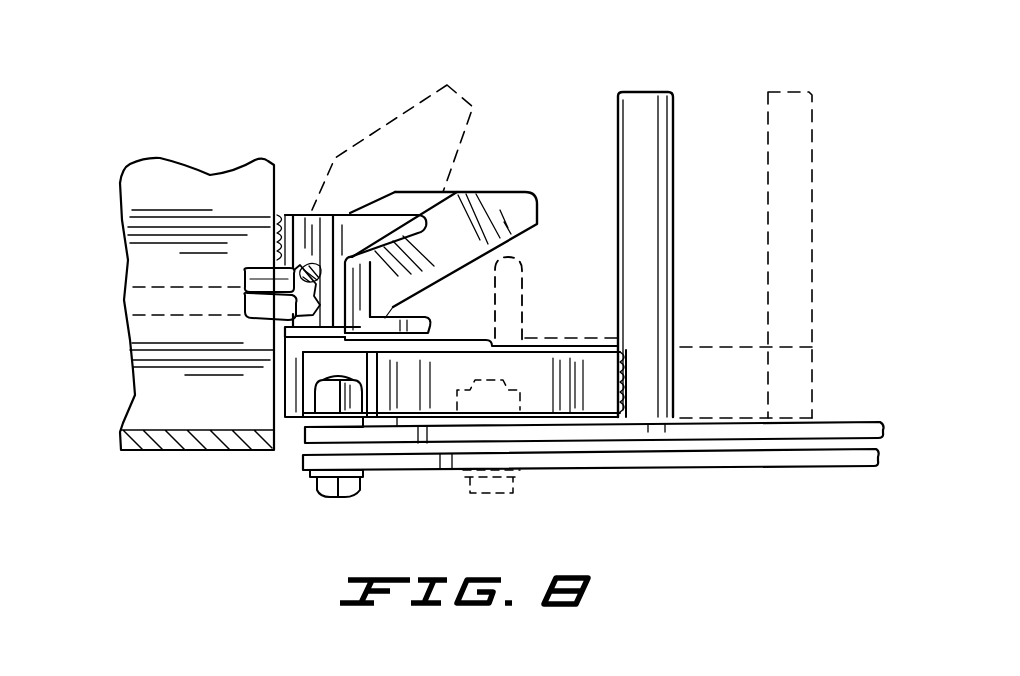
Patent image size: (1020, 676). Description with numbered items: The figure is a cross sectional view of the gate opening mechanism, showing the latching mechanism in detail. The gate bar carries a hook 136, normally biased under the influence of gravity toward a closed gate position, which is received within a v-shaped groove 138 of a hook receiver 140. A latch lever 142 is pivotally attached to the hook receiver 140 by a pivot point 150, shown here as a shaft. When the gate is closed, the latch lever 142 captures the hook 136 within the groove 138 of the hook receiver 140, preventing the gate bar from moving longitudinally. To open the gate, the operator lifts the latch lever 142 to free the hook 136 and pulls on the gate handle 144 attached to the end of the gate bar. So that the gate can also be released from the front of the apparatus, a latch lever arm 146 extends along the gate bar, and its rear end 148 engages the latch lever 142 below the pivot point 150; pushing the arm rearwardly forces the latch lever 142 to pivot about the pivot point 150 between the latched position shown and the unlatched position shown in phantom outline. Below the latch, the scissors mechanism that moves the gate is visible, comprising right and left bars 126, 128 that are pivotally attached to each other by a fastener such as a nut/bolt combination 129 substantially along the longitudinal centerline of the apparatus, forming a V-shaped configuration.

The right bar 126 is at (883, 424).
The left bar 128 is at (878, 467).
The nut/bolt combination 129 is at (325, 498).
The hook 136 is at (412, 307).
The v-shaped groove 138 is at (458, 191).
The hook receiver 140 is at (334, 217).
The latch lever 142 is at (447, 85).
The gate handle 144 is at (652, 92).
The latch lever arm 146 is at (240, 300).
The rear end 148 is at (237, 287).
The pivot point 150 is at (295, 217).